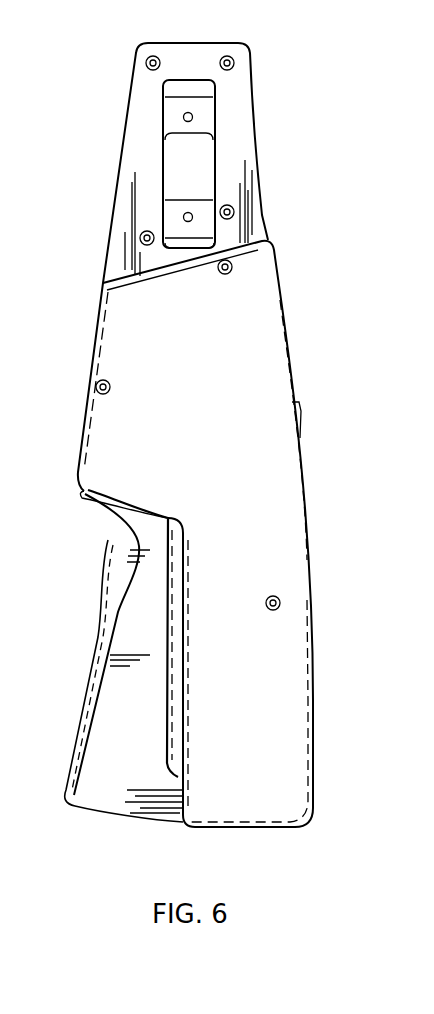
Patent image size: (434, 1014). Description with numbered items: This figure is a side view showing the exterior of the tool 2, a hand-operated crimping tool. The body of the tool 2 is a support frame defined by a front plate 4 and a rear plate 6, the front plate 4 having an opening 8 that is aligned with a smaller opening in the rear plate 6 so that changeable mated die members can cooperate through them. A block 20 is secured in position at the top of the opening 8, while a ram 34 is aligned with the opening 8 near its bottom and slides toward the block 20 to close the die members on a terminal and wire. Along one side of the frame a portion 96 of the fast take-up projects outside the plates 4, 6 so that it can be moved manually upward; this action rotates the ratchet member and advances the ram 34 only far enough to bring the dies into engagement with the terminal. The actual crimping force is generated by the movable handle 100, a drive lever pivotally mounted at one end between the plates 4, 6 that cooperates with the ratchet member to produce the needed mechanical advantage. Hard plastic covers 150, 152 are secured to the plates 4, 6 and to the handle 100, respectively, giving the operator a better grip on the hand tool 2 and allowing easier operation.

The tool 2 is at (259, 51).
The front plate 4 is at (247, 203).
The rear plate 6 is at (207, 118).
The opening 8 is at (212, 165).
The block 20 is at (213, 86).
The ram 34 is at (198, 222).
The portion of take-up 96 is at (303, 413).
The movable handle 100 is at (175, 608).
The hard plastic cover 150 is at (270, 728).
The hard plastic cover 152 is at (132, 787).